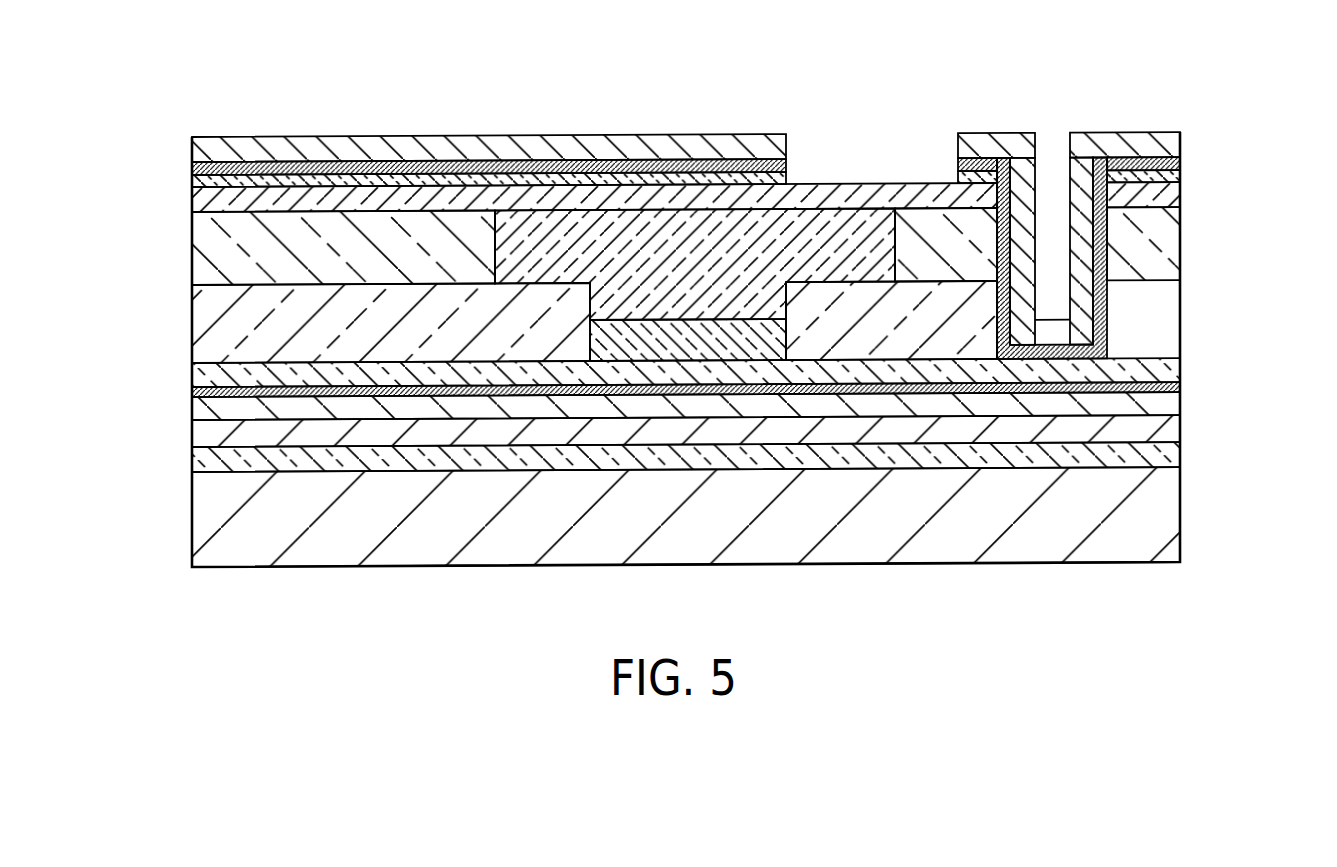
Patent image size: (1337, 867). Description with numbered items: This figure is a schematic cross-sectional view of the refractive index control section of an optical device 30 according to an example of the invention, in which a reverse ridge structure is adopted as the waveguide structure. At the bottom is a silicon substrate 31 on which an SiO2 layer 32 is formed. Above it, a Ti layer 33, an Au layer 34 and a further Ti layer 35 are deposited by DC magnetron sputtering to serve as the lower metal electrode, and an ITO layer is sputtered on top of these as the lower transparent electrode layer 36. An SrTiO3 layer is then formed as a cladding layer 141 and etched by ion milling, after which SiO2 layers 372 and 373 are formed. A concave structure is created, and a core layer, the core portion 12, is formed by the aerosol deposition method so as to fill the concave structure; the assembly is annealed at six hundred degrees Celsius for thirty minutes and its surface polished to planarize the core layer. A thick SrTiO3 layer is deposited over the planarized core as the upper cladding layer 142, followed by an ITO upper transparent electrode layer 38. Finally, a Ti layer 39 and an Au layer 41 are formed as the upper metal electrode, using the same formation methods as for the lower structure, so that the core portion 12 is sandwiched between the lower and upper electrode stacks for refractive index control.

The electro-optical device 30 is at (698, 78).
The silicon substrate 31 is at (1162, 515).
The SiO2 layer 32 is at (1170, 457).
The Ti layer 33 is at (1168, 438).
The Au layer 34 is at (1170, 408).
The Ti layer 35 is at (1172, 385).
The lower transparent electrode layer 36 is at (1175, 371).
The core portion 12 is at (857, 230).
The cladding layer 141 is at (762, 340).
The upper cladding layer 142 is at (1175, 202).
The SiO2 layer 372 is at (933, 306).
The SiO2 layer 373 is at (1165, 248).
The upper transparent electrode layer 38 is at (1180, 182).
The Ti layer 39 is at (1190, 160).
The Au layer 41 is at (1128, 140).